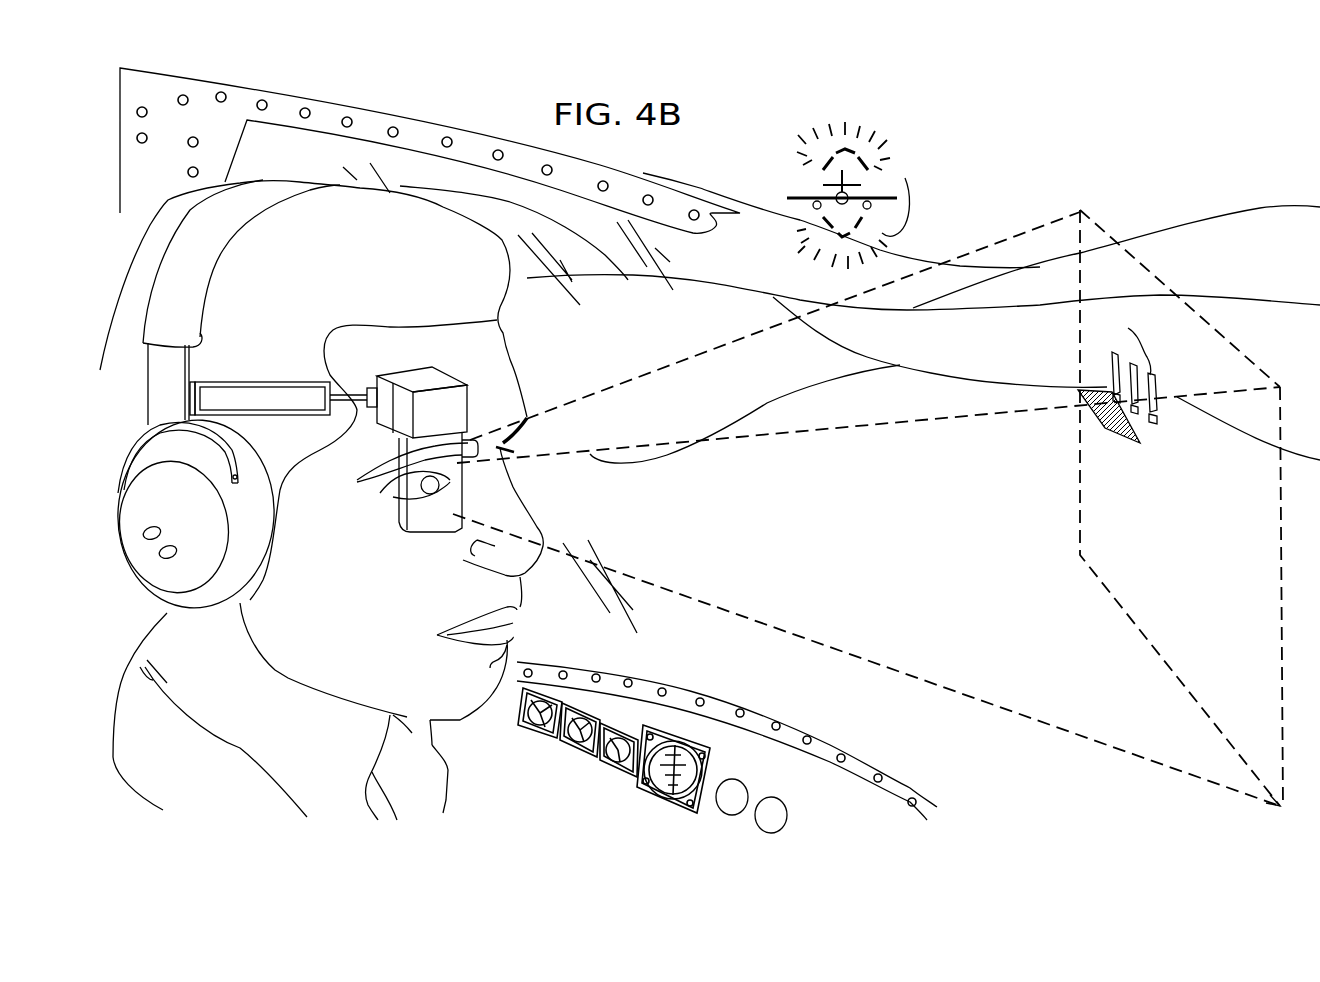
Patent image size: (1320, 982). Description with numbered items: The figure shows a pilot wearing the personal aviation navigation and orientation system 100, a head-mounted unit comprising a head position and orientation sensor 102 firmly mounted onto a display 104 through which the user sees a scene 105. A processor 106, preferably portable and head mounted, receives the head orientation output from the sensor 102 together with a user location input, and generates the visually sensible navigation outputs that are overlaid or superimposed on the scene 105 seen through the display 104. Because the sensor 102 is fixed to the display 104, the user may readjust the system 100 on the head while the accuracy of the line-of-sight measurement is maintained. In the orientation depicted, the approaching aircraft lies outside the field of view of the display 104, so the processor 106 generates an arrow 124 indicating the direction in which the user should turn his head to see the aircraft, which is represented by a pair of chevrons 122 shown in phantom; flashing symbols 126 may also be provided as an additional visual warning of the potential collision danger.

The personal aviation navigation and orientation system 100 is at (380, 411).
The head position and orientation sensor 102 is at (467, 383).
The display 104 is at (413, 511).
The scene 105 is at (1128, 592).
The processor 106 is at (407, 375).
The location indicator symbol 122 is at (860, 163).
The arrow 124 is at (1120, 446).
The flashing symbols 126 is at (1128, 365).